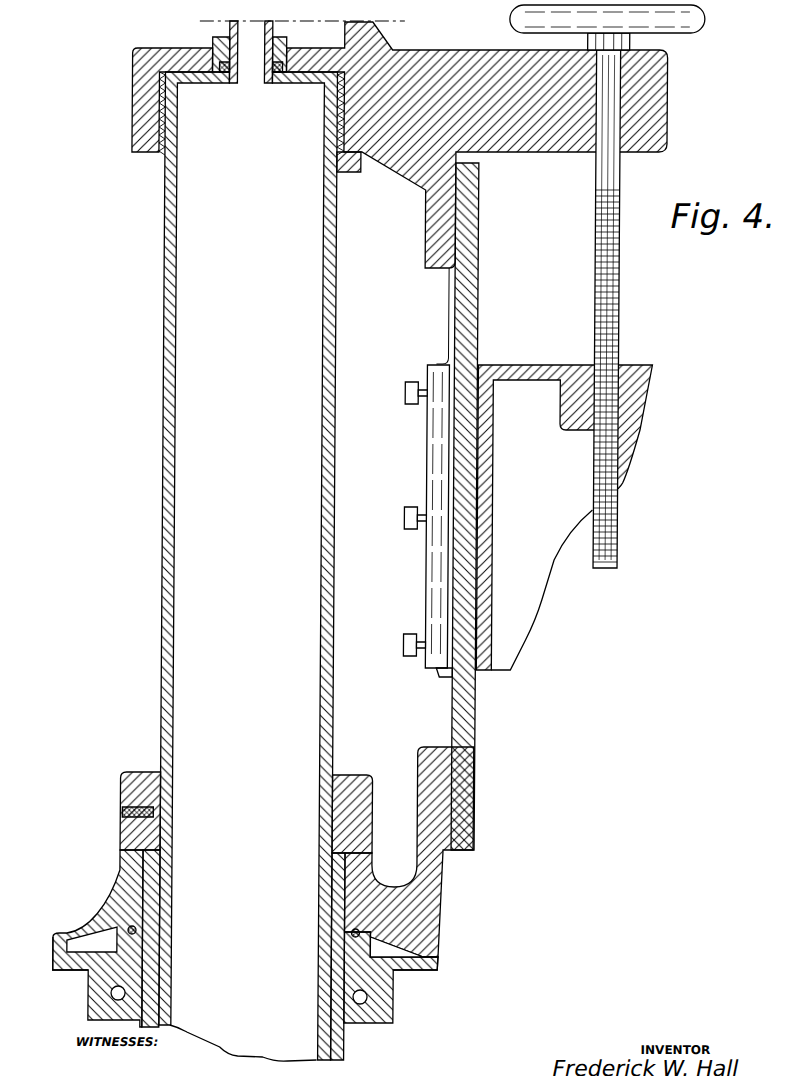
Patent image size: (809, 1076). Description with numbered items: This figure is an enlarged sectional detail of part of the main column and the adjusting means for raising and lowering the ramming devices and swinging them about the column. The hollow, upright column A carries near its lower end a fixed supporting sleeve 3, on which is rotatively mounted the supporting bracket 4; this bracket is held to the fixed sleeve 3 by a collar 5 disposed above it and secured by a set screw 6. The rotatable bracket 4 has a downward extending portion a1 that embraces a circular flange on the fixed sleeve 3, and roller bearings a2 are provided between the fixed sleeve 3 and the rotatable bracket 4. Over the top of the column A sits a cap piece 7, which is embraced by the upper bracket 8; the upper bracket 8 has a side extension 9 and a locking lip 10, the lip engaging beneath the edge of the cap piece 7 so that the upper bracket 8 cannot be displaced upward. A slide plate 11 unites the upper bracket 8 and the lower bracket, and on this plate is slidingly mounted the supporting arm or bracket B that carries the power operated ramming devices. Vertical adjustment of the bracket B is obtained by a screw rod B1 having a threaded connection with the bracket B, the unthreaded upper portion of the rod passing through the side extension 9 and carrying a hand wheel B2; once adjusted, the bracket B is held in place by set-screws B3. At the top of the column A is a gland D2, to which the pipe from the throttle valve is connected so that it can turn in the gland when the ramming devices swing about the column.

The hollow upright column A is at (212, 186).
The fixed supporting sleeve 3 is at (245, 957).
The supporting bracket 4 is at (447, 903).
The collar 5 is at (360, 776).
The set screw 6 is at (128, 811).
The cap piece 7 is at (163, 153).
The upper bracket 8 is at (140, 82).
The side extension 9 is at (546, 152).
The locking lip 10 is at (358, 174).
The slide plate 11 is at (480, 738).
The supporting arm or bracket B is at (535, 365).
The screw rod B1 is at (621, 291).
The hand wheel B2 is at (694, 34).
The set-screws B3 is at (408, 393).
The gland D2 is at (288, 45).
The downward extending portion a1 is at (58, 958).
The roller bearings a2 is at (134, 927).